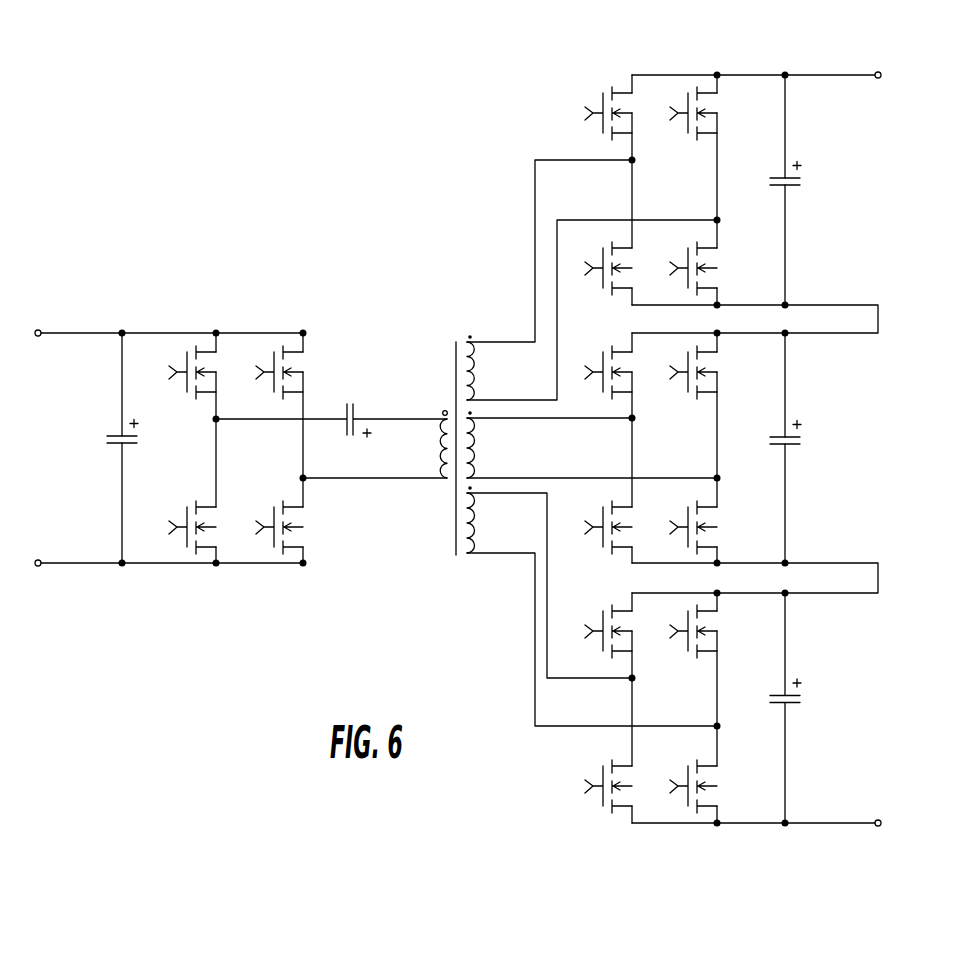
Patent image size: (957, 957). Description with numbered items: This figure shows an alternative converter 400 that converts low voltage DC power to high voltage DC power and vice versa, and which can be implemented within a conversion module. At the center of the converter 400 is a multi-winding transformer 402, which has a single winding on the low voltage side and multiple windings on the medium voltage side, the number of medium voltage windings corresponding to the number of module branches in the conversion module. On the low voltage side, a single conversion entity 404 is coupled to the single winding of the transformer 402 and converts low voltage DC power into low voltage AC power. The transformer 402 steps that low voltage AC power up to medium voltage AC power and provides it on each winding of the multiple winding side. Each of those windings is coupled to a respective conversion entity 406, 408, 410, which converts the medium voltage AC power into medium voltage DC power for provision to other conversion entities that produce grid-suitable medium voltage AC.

The converter 400 is at (355, 115).
The multi-winding transformer 402 is at (418, 328).
The conversion entity 404 is at (293, 321).
The conversion entity 406 is at (720, 63).
The conversion entity 408 is at (750, 395).
The conversion entity 410 is at (750, 661).